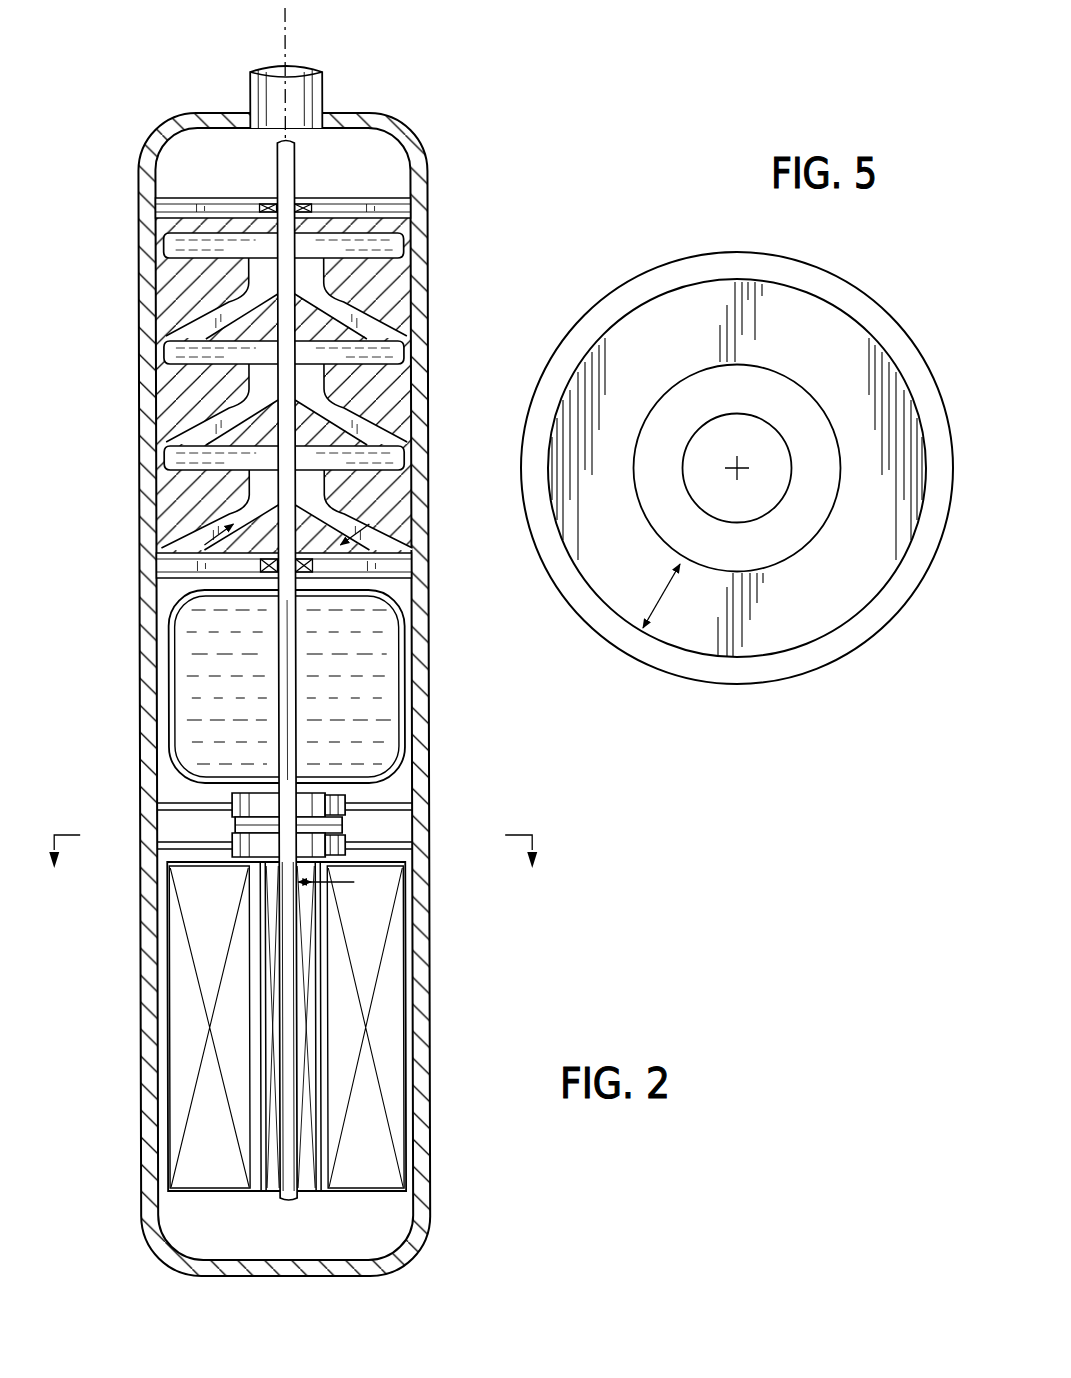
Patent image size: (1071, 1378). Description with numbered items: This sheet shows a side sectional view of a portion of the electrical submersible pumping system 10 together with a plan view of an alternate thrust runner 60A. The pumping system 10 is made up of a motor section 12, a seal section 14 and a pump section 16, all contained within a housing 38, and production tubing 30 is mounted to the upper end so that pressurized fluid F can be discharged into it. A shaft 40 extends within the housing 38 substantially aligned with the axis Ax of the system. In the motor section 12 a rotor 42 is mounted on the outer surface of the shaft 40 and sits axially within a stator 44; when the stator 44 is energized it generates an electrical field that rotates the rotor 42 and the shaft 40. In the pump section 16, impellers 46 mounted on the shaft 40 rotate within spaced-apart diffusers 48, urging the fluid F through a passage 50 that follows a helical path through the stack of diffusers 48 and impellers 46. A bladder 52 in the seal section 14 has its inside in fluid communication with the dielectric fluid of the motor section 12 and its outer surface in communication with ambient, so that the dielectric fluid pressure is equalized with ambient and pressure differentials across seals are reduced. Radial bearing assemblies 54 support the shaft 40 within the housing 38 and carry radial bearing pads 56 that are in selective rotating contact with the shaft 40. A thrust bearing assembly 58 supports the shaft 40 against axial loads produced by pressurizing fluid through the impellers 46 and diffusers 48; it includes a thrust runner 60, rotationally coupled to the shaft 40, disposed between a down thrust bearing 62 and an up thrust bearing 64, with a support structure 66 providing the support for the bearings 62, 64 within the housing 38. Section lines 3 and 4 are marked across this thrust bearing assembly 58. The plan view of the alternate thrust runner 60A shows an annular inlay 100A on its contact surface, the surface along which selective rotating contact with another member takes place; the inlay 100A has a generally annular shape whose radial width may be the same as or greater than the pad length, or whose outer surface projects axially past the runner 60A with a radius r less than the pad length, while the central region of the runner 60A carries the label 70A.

In FIG. 2, the electrical submersible pumping system 10 is at (114, 172).
In FIG. 2, the motor section 12 is at (124, 1063).
In FIG. 2, the seal section 14 is at (126, 687).
In FIG. 2, the pump section 16 is at (124, 404).
In FIG. 2, the production tubing 30 is at (249, 84).
In FIG. 2, the housing 38 is at (148, 585).
In FIG. 2, the shaft 40 is at (296, 165).
In FIG. 2, the rotor 42 is at (302, 1156).
In FIG. 2, the stator 44 is at (380, 1014).
In FIG. 2, the impellers 46 is at (374, 247).
In FIG. 2, the diffusers 48 is at (177, 288).
In FIG. 2, the passage 50 is at (366, 422).
In FIG. 2, the bladder 52 is at (384, 662).
In FIG. 2, the radial bearing assemblies 54 is at (397, 182).
In FIG. 2, the radial bearing pads 56 is at (311, 201).
In FIG. 2, the thrust bearing assembly 58 is at (442, 780).
In FIG. 2, the thrust runner 60 is at (236, 826).
In FIG. 2, the down thrust bearing 62 is at (344, 817).
In FIG. 2, the up thrust bearing 64 is at (350, 851).
In FIG. 2, the support structure 66 is at (172, 804).
In FIG. 5, the thrust runner 60A is at (747, 449).
In FIG. 5, the inner race 70A is at (714, 414).
In FIG. 5, the annular inlay 100A is at (858, 618).
In FIG. 2, the axis Ax is at (281, 27).
In FIG. 5, the axis Ax is at (735, 471).
In FIG. 2, the fluid F is at (208, 528).
In FIG. 5, the radius r is at (660, 591).
In FIG. 2, the section line 3 is at (293, 869).
In FIG. 2, the section line 4 is at (325, 787).